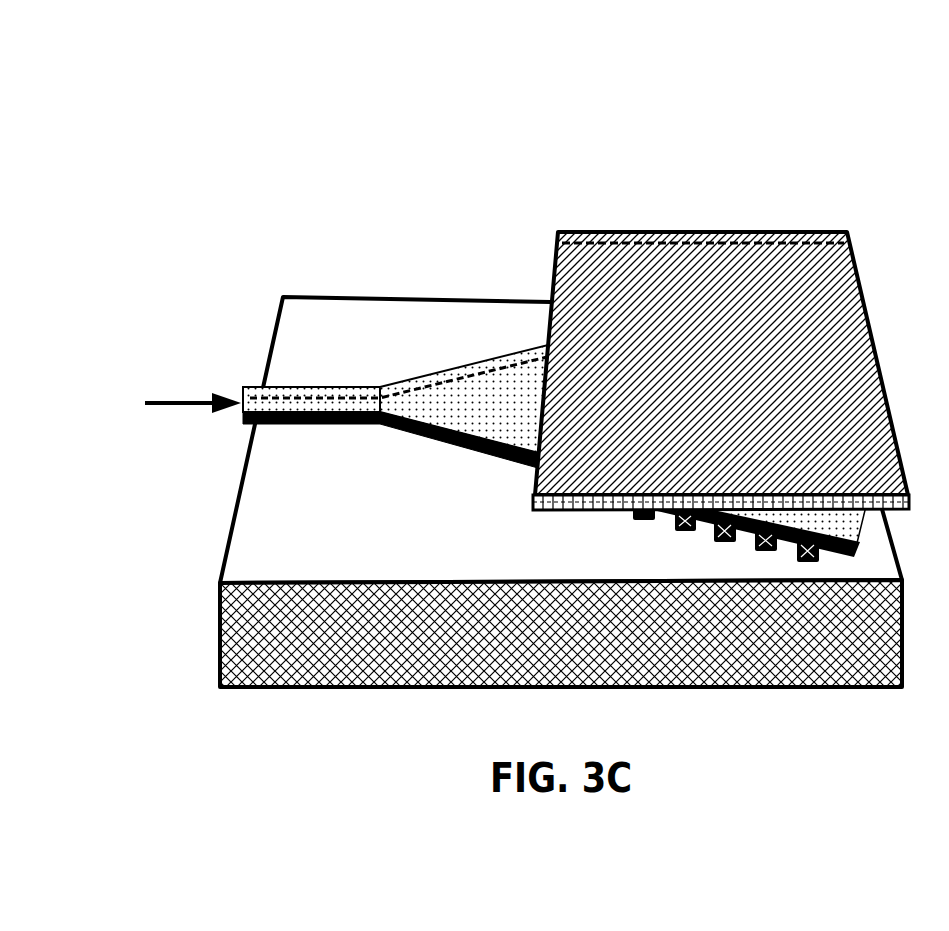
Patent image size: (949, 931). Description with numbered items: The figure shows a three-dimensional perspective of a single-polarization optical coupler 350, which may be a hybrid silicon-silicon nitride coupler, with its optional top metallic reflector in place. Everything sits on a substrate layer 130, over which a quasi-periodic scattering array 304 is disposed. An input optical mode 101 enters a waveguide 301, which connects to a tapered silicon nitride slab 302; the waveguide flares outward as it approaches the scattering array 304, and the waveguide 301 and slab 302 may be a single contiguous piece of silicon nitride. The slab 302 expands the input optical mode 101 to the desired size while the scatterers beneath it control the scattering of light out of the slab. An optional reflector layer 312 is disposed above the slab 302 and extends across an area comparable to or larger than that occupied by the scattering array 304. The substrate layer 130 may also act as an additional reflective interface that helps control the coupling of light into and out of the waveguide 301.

The optical coupler 350 is at (925, 52).
The substrate layer 130 is at (283, 296).
The input optical mode 101 is at (193, 391).
The waveguide 301 is at (378, 380).
The tapered silicon nitride slab 302 is at (513, 418).
The scattering array 304 is at (623, 539).
The reflector layer 312 is at (729, 385).